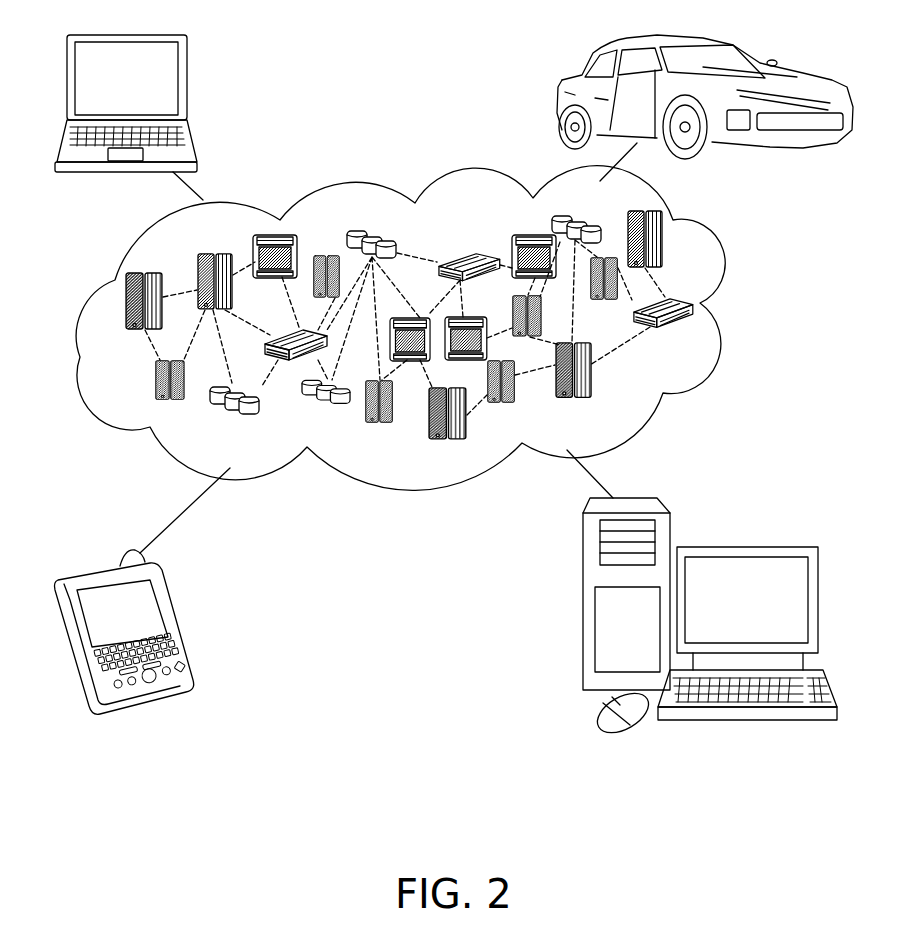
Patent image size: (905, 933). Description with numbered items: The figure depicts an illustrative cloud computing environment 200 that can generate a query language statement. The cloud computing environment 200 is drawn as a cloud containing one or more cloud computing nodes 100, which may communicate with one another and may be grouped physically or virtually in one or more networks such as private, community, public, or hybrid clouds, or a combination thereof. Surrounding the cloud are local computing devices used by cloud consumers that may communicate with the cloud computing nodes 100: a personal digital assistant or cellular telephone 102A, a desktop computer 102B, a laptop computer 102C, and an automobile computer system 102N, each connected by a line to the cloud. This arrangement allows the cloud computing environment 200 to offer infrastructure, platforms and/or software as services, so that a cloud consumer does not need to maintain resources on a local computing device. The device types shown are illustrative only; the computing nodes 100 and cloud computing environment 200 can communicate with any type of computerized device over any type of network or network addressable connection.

The cloud computing nodes 100 is at (439, 328).
The cloud computing environment 200 is at (718, 290).
The personal digital assistant (PDA) or cellular telephone 102A is at (167, 597).
The desktop computer 102B is at (735, 547).
The laptop computer 102C is at (187, 63).
The automobile computer system 102N is at (558, 98).